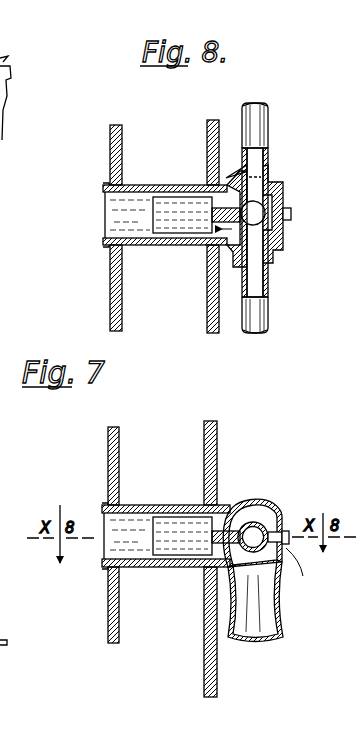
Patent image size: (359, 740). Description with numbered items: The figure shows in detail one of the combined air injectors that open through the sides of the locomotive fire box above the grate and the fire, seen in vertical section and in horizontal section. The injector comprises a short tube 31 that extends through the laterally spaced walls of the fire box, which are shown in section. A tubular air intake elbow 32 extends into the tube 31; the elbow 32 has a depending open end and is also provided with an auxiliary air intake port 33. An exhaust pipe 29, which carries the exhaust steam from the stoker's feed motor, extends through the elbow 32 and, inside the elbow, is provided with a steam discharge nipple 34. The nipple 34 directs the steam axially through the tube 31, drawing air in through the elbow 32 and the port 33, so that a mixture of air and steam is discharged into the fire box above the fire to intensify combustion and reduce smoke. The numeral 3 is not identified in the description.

In FIG. 8, the wall 3 is at (108, 288).
In FIG. 7, the wall 3 is at (107, 601).
In FIG. 8, the exhaust pipe 29 is at (256, 291).
In FIG. 8, the short tube 31 is at (139, 186).
In FIG. 7, the short tube 31 is at (145, 506).
In FIG. 8, the tubular air intake elbow 32 is at (190, 221).
In FIG. 7, the tubular air intake elbow 32 is at (213, 528).
In FIG. 8, the auxiliary air intake port 33 is at (286, 193).
In FIG. 7, the auxiliary air intake port 33 is at (285, 521).
In FIG. 8, the steam discharge nipple 34 is at (216, 212).
In FIG. 7, the steam discharge nipple 34 is at (217, 549).